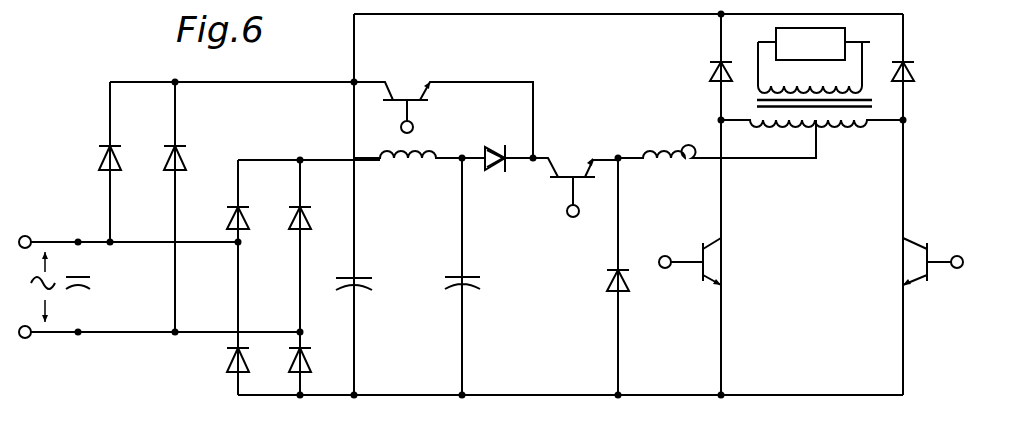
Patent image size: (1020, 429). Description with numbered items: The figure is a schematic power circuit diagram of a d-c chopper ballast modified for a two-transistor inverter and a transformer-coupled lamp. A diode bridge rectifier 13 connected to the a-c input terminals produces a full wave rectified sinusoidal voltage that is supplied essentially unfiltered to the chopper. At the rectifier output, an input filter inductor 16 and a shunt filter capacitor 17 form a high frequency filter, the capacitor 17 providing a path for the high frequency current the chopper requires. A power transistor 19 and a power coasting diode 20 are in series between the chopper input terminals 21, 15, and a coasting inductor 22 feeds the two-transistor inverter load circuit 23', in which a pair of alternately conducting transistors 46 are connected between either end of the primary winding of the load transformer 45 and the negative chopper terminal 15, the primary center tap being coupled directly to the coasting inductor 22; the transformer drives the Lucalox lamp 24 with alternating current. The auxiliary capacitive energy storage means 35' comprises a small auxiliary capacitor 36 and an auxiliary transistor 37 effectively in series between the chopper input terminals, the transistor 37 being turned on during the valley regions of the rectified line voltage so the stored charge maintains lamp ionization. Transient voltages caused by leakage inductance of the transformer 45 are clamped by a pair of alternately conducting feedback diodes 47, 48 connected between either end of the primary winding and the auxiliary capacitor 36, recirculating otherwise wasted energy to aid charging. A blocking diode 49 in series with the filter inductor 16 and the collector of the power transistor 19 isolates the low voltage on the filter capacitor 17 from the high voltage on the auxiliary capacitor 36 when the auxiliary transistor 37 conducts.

The diode bridge rectifier 13 is at (276, 280).
The negative chopper terminal 15 is at (476, 396).
The input filter inductor 16 is at (401, 163).
The shunt filter capacitor 17 is at (466, 287).
The power transistor 19 is at (584, 181).
The power coasting diode 20 is at (614, 278).
The chopper input terminal 21 is at (490, 165).
The coasting inductor 22 is at (688, 152).
The two-transistor inverter load circuit 23' is at (812, 338).
The Lucalox lamp 24 is at (846, 32).
The auxiliary capacitive energy storage means 35' is at (320, 62).
The auxiliary capacitor 36 is at (361, 276).
The auxiliary transistor 37 is at (418, 105).
The load transformer 45 is at (823, 126).
The alternately conducting transistors 46 is at (700, 270).
The feedback diode 47 is at (717, 70).
The feedback diode 48 is at (905, 62).
The blocking diode 49 is at (498, 146).